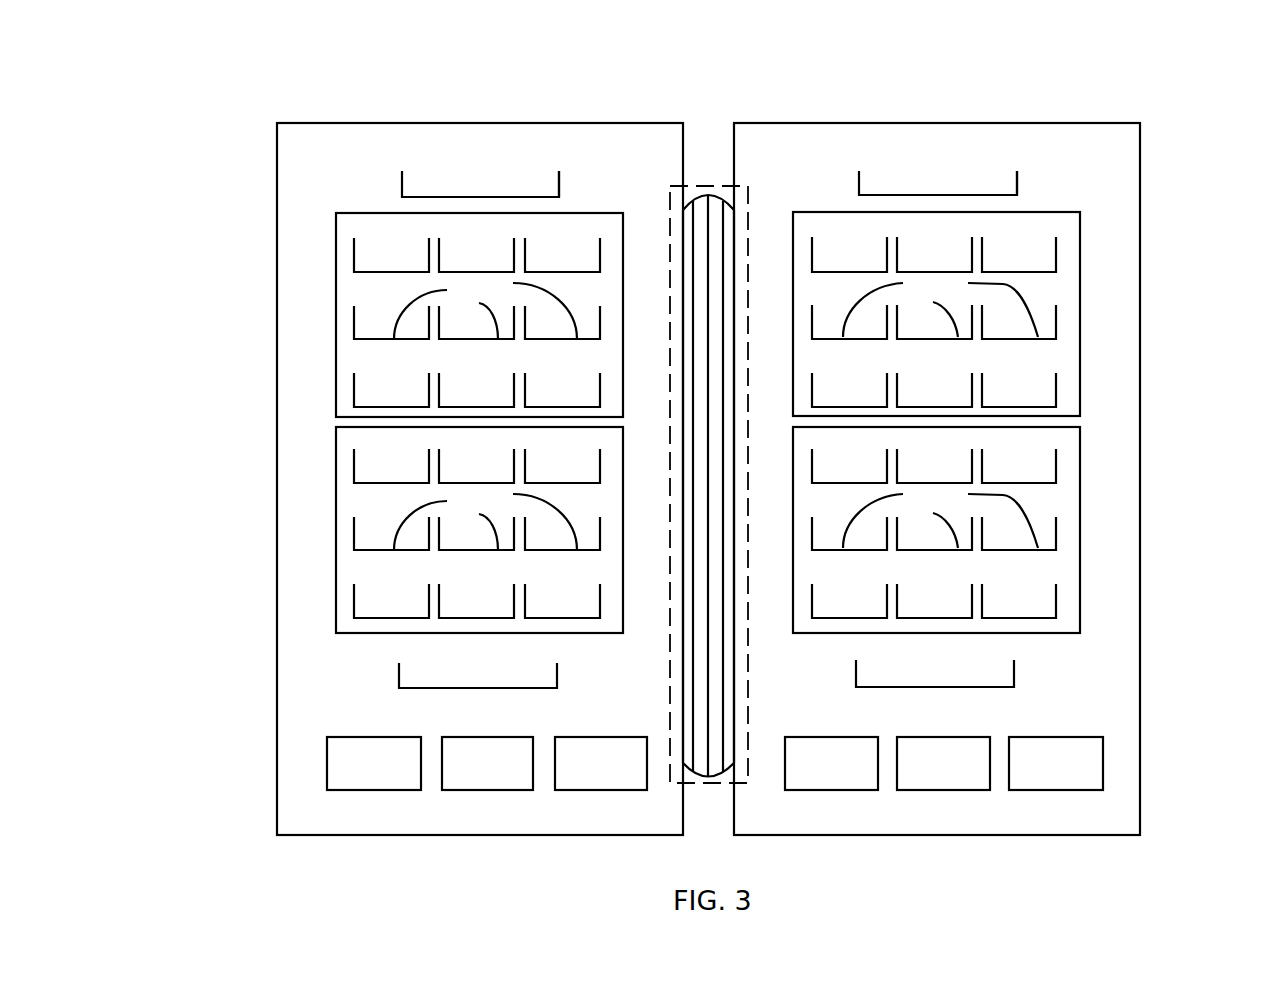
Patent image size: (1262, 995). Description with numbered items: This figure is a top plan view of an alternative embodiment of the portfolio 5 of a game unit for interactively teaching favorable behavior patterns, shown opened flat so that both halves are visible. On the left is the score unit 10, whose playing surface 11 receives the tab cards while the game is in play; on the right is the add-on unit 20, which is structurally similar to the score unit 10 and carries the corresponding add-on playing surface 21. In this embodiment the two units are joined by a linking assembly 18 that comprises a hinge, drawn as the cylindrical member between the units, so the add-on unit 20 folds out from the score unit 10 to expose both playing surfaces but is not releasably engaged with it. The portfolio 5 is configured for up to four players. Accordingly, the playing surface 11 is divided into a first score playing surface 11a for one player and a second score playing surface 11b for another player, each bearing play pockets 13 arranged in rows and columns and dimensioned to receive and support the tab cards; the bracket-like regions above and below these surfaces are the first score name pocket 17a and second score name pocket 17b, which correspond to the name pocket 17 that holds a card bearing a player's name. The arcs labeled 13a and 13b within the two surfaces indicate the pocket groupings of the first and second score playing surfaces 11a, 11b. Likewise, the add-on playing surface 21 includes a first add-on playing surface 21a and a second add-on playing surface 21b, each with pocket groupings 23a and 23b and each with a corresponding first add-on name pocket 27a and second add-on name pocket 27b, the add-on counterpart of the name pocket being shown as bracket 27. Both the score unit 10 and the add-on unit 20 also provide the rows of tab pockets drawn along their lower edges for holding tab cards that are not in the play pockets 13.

The portfolio 5 is at (837, 93).
The score unit 10 is at (276, 291).
The playing surface 11 is at (334, 251).
The first score playing surface 11a is at (336, 351).
The second score playing surface 11b is at (335, 530).
The play pocket 13 is at (368, 270).
The key arrangement in first key group 13a is at (485, 306).
The key arrangement in second key group 13b is at (485, 516).
The name pocket 17 is at (398, 186).
The first score name pocket 17a is at (560, 186).
The second score name pocket 17b is at (558, 677).
The linking assembly 18 is at (698, 187).
The add-on unit 20 is at (1142, 463).
The add-on playing surface 21 is at (1082, 233).
The first add-on playing surface 21a is at (1081, 358).
The second add-on playing surface 21b is at (1081, 599).
The key arrangement in third key group 23a is at (940, 304).
The key arrangement in fourth key group 23b is at (940, 515).
The upper bracket region of second body 27 is at (857, 178).
The first add-on name pocket 27a is at (1018, 182).
The second add-on name pocket 27b is at (1015, 678).